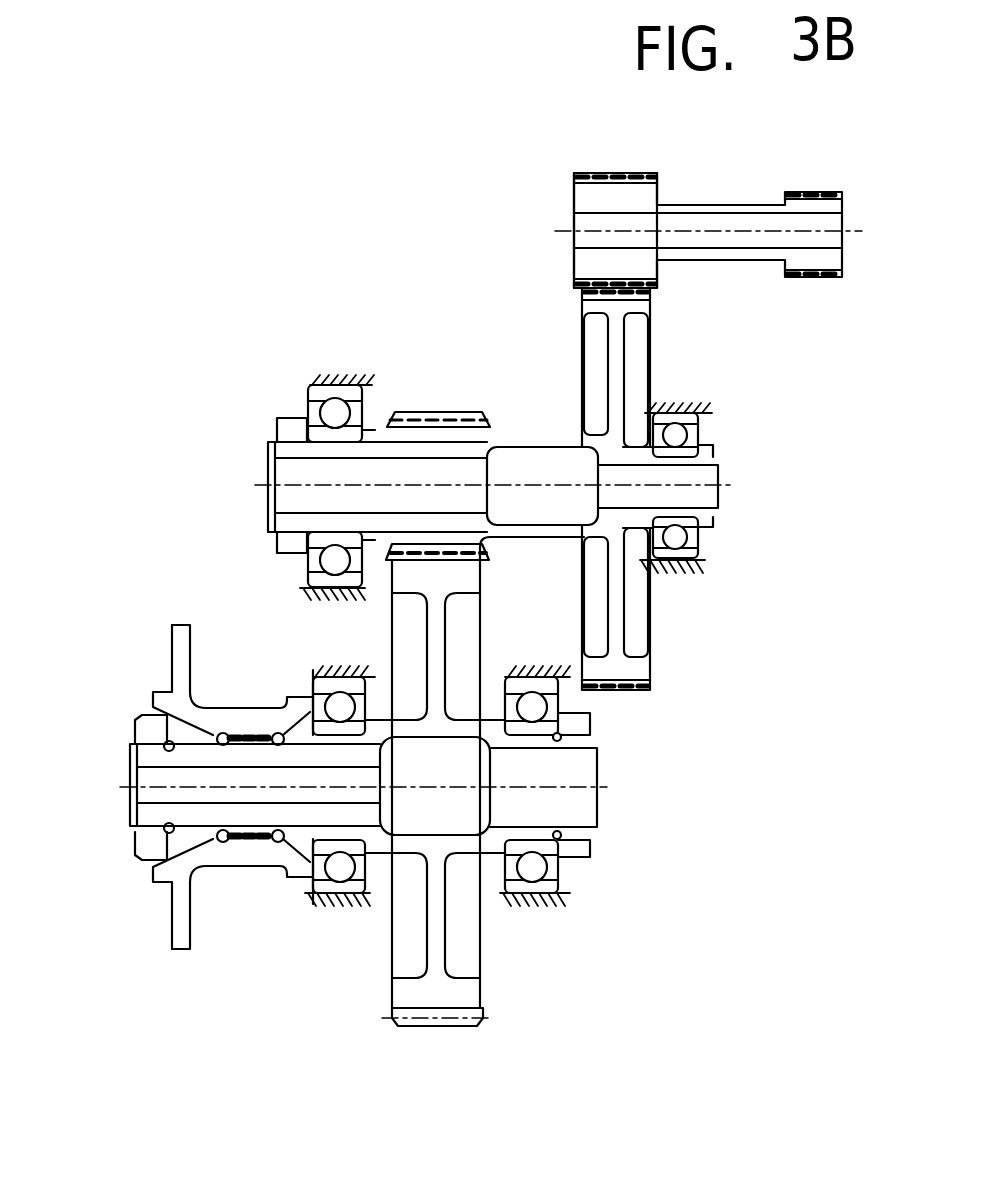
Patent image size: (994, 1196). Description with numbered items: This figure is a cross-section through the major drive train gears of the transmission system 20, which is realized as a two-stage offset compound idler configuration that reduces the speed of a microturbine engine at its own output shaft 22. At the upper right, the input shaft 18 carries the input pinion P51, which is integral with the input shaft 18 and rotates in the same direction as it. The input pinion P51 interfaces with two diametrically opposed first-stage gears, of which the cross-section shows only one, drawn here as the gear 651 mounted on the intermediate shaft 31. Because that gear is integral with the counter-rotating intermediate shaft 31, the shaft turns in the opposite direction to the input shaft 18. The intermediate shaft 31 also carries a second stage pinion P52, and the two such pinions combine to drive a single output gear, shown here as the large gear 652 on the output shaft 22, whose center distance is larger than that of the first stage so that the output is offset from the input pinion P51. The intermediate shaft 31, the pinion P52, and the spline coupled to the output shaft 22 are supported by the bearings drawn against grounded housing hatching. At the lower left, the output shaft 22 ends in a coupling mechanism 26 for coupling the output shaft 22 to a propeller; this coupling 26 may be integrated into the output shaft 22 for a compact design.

The transmission system 20 is at (134, 397).
The input shaft 18 is at (712, 208).
The input pinion P51 is at (612, 173).
The gear 651 is at (637, 303).
The intermediate shaft 31 is at (556, 447).
The second stage pinion P52 is at (438, 417).
The output shaft 22 is at (347, 817).
The coupling mechanism 26 is at (183, 920).
The gear 652 is at (472, 995).